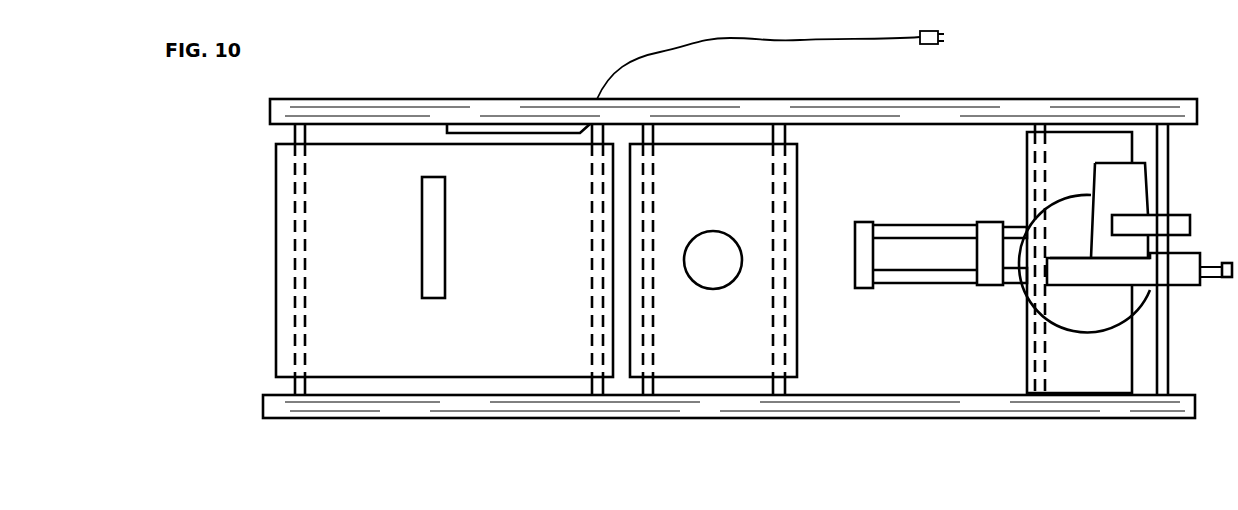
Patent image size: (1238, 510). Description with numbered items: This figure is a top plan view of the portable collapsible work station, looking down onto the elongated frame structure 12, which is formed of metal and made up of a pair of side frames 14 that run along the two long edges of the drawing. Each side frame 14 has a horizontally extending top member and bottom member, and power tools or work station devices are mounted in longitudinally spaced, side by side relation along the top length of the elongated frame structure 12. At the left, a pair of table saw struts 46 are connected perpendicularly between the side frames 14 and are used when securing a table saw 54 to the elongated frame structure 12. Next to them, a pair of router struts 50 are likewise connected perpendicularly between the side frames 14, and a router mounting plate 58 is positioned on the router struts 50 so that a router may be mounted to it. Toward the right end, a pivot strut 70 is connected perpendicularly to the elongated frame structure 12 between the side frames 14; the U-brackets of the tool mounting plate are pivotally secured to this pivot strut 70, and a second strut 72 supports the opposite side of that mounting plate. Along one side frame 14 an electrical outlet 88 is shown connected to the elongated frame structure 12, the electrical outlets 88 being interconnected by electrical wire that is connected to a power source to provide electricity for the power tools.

The elongated frame structure 12 is at (1145, 112).
The side frames 14 is at (428, 108).
The table saw struts 46 is at (290, 380).
The router struts 50 is at (645, 388).
The table saw 54 is at (318, 218).
The router mounting plate 58 is at (745, 168).
The pivot strut 70 is at (1038, 392).
The second strut 72 is at (1165, 300).
The electrical outlets 88 is at (532, 128).